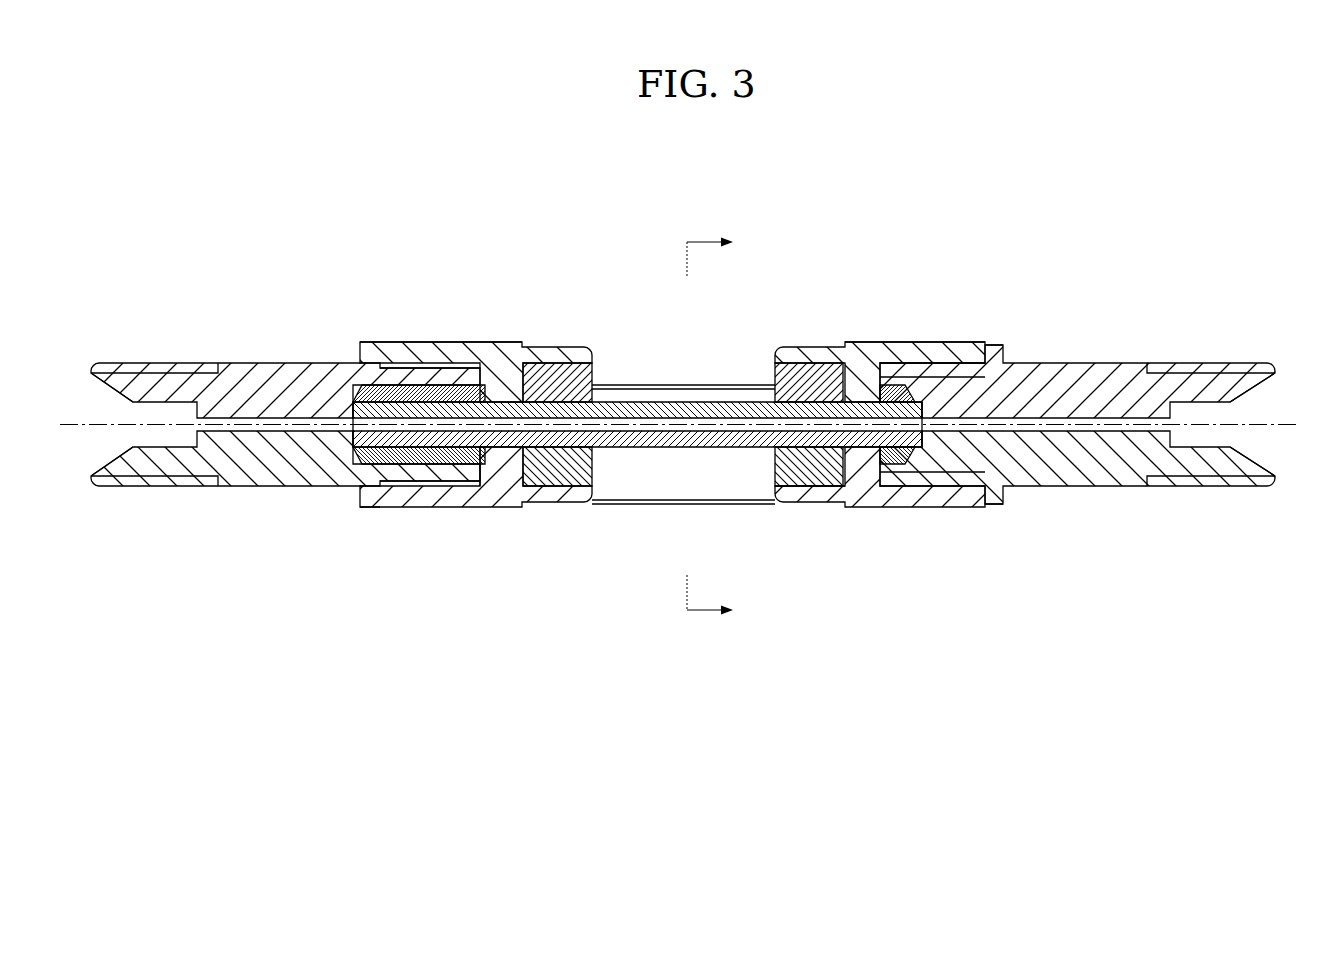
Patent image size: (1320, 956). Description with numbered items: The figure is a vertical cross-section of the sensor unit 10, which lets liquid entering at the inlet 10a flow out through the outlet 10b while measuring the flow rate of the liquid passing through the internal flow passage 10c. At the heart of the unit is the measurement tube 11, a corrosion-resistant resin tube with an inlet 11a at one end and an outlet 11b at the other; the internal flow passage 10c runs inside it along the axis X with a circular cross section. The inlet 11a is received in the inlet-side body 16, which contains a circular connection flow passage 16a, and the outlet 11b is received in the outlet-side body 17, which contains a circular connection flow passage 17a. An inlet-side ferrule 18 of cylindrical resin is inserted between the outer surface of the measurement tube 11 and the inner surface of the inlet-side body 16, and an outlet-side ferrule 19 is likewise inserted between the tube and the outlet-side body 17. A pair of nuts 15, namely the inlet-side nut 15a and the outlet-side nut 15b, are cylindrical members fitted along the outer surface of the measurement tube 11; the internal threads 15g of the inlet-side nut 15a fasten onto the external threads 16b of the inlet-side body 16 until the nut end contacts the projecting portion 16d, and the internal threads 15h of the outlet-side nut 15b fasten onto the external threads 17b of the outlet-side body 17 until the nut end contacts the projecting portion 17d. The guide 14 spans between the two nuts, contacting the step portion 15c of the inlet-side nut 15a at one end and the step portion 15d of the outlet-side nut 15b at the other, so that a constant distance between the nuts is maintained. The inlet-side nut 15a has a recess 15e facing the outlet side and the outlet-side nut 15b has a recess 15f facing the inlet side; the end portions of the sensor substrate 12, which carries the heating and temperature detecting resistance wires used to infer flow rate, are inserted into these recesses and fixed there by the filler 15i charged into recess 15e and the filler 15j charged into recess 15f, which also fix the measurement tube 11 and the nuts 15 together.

The sensor unit 10 is at (1079, 236).
The inlet 10a is at (94, 395).
The outlet 10b is at (1268, 375).
The internal flow passage 10c is at (660, 448).
The measurement tube 11 is at (660, 422).
The inlet 11a is at (340, 405).
The outlet 11b is at (929, 412).
The sensor substrate 12 is at (713, 440).
The guide 14 is at (620, 506).
The nut 15 is at (672, 430).
The inlet-side nut 15a is at (480, 423).
The outlet-side nut 15b is at (874, 430).
The step portion 15c is at (527, 343).
The step portion 15d is at (843, 343).
The recess 15e is at (570, 362).
The recess 15f is at (789, 362).
The internal threads 15g is at (426, 343).
The internal threads 15h is at (928, 387).
The filler 15i is at (503, 487).
The filler 15j is at (813, 500).
The inlet-side body 16 is at (285, 470).
The connection flow passage 16a is at (237, 432).
The external threads 16b is at (418, 490).
The projecting portion 16d is at (367, 510).
The outlet-side body 17 is at (1077, 468).
The connection flow passage 17a is at (1110, 432).
The external threads 17b is at (925, 480).
The projecting portion 17d is at (993, 508).
The inlet-side ferrule 18 is at (472, 468).
The outlet-side ferrule 19 is at (884, 470).
The axis X is at (1206, 432).